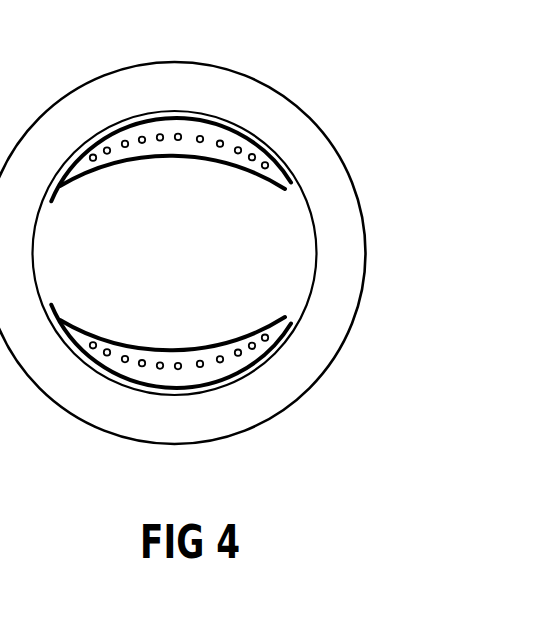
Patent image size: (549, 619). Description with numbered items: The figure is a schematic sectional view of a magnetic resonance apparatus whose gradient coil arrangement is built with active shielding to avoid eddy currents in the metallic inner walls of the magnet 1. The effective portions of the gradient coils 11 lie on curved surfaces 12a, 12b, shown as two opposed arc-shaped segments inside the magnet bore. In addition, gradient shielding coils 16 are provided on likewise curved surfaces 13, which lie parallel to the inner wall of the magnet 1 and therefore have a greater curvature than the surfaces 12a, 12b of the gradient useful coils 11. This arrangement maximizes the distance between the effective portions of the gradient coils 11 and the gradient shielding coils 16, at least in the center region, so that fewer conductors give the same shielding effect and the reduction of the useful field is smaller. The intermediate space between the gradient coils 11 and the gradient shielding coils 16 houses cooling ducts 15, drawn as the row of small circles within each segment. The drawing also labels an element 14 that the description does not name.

The magnet 1 is at (322, 331).
The gradient coils 11 is at (173, 207).
The curved surface 12a is at (158, 156).
The curved surface 12b is at (156, 347).
The curved surfaces 13 is at (168, 114).
The outer segment surface 14 is at (124, 129).
The cooling ducts 15 is at (238, 140).
The gradient shielding coils 16 is at (291, 173).